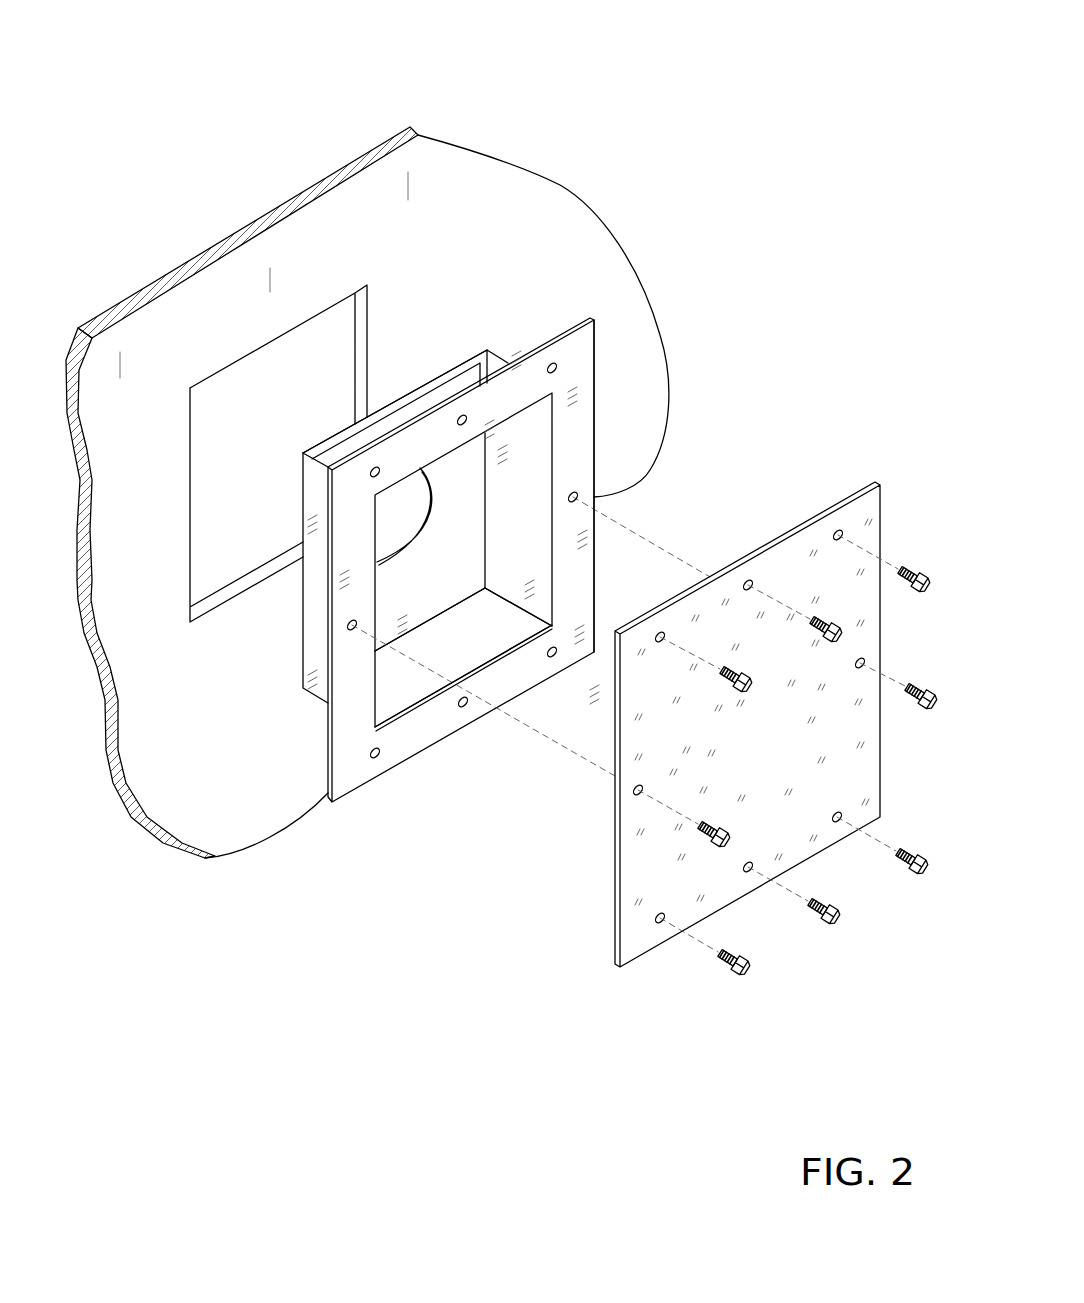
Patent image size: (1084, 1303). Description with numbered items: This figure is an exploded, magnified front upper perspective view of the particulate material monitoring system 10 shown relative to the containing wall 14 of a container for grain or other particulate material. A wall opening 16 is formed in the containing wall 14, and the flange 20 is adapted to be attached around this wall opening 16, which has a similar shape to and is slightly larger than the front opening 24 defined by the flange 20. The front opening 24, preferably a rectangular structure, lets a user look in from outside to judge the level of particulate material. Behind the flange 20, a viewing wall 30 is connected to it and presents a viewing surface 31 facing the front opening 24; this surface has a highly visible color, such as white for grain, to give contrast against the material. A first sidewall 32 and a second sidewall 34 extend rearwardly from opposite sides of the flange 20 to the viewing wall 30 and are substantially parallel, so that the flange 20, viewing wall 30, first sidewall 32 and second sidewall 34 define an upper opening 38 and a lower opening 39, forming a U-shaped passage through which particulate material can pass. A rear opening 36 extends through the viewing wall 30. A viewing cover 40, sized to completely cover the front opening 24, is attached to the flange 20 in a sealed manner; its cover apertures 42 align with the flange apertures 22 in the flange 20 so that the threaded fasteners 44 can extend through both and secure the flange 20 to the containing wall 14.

The particulate material monitoring system 10 is at (780, 115).
The containing wall 14 is at (578, 238).
The wall opening 16 is at (367, 320).
The flange 20 is at (349, 772).
The flange apertures 22 is at (572, 503).
The front opening 24 is at (395, 713).
The viewing wall 30 is at (418, 382).
The viewing surface 31 is at (428, 598).
The first sidewall 32 is at (534, 428).
The second sidewall 34 is at (317, 615).
The rear opening 36 is at (413, 549).
The upper opening 38 is at (497, 350).
The lower opening 39 is at (518, 610).
The viewing cover 40 is at (640, 862).
The cover apertures 42 is at (655, 920).
The fasteners 44 is at (728, 953).